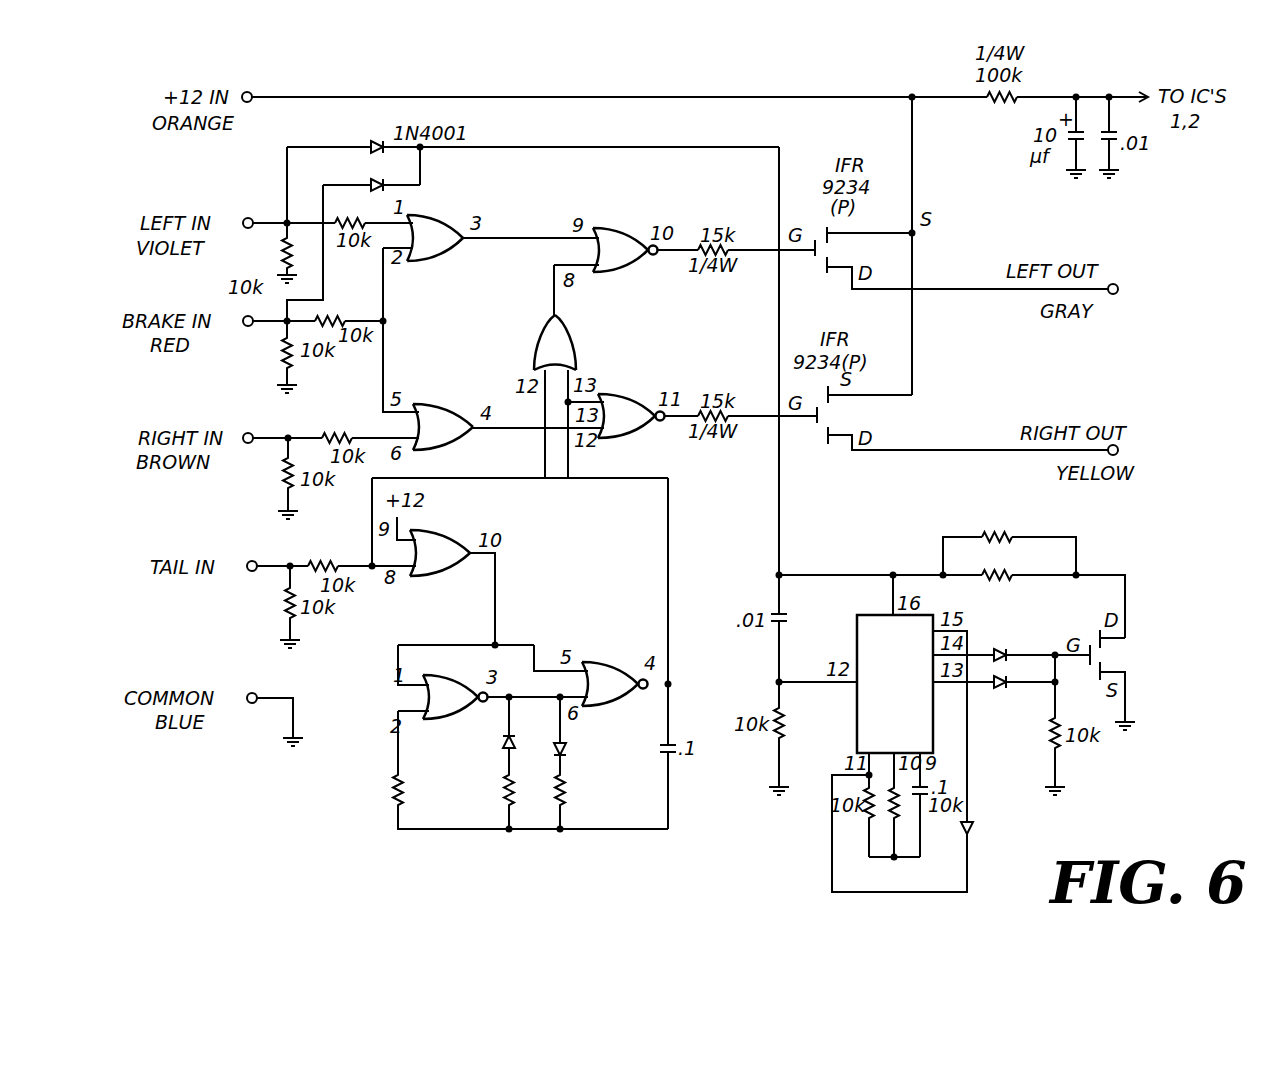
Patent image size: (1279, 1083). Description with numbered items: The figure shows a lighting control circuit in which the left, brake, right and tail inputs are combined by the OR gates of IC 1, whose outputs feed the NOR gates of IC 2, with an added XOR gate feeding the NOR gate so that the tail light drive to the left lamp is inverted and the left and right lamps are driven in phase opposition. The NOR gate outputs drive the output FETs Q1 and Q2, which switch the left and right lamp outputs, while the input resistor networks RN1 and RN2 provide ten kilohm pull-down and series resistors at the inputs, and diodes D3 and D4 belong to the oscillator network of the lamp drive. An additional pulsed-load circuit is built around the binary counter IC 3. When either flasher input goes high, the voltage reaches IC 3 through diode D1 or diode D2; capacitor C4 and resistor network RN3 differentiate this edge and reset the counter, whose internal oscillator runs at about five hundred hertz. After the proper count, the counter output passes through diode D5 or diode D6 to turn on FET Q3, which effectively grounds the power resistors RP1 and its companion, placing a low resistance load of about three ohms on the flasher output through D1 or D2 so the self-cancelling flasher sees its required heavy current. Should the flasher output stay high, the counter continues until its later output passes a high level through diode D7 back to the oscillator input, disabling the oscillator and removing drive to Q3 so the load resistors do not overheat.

The IC1 1 is at (491, 395).
The IC2 2 is at (544, 473).
The IC3 3 is at (895, 684).
The diode D1 is at (533, 137).
The diode D2 is at (371, 169).
The diode D3 is at (487, 763).
The diode D4 is at (577, 763).
The diode D5 is at (1001, 642).
The diode D6 is at (1001, 694).
The diode D7 is at (919, 761).
The FET Q1 is at (945, 258).
The FET Q2 is at (950, 431).
The FET Q3 is at (1123, 680).
The capacitor C4 is at (795, 628).
The resistor network RN1 is at (303, 295).
The resistor network RN2 is at (290, 435).
The resistor network RN3 is at (925, 806).
The power resistor RP1 is at (952, 573).